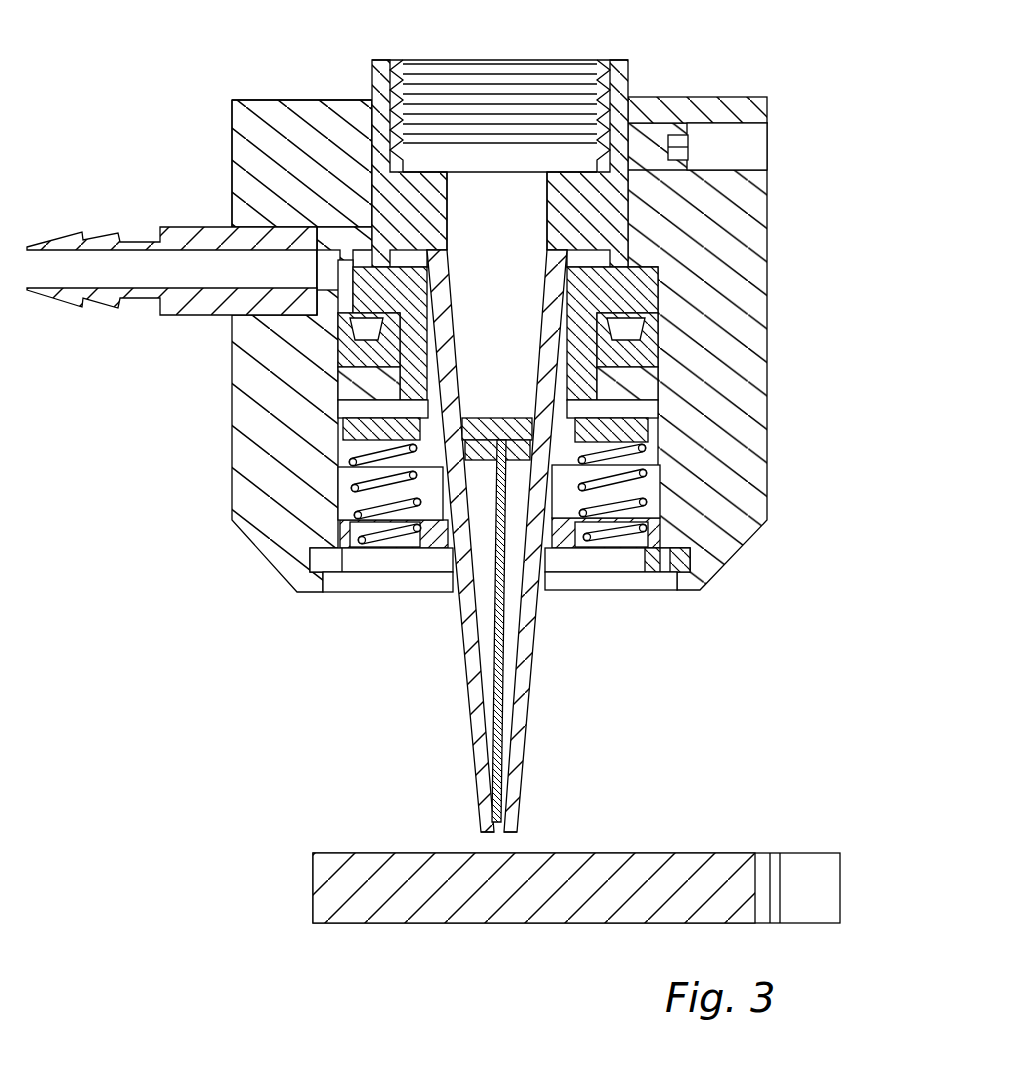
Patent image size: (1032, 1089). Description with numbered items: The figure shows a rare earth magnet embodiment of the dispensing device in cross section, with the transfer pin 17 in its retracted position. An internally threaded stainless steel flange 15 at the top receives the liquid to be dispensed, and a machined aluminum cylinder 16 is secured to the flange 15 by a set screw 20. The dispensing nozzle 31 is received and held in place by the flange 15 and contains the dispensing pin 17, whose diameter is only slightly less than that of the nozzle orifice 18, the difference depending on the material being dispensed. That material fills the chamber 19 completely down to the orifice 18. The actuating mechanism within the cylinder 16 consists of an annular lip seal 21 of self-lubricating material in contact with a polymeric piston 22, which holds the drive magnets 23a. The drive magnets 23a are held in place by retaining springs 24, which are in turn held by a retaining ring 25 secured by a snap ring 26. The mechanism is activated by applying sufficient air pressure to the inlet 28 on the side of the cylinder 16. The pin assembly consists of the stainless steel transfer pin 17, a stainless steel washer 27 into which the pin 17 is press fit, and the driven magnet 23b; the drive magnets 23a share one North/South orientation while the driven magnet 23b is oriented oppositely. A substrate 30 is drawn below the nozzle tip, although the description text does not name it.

The internally threaded stainless steel flange 15 is at (372, 60).
The machined aluminum cylinder 16 is at (245, 150).
The transfer pin 17 is at (496, 667).
The nozzle orifice 18 is at (482, 828).
The chamber 19 is at (480, 248).
The set screw 20 is at (645, 137).
The annular lip seal 21 is at (655, 330).
The piston 22 is at (650, 377).
The drive magnet 23a is at (650, 431).
The driven magnet 23b is at (495, 417).
The retaining springs 24 is at (650, 477).
The retaining ring 25 is at (655, 530).
The snap ring 26 is at (690, 560).
The washer 27 is at (507, 462).
The inlet 28 is at (68, 236).
The substrate 30 is at (366, 865).
The dispensing nozzle 31 is at (463, 638).